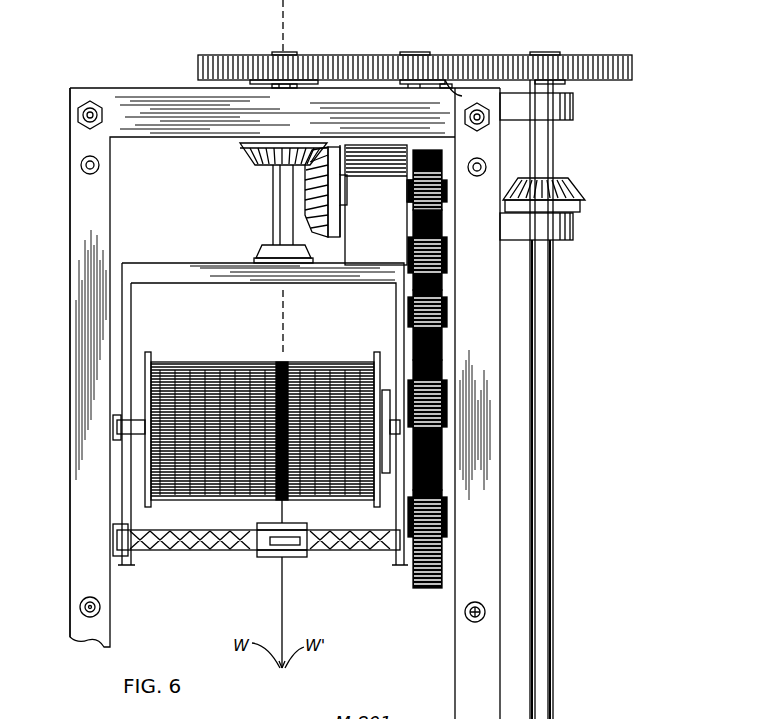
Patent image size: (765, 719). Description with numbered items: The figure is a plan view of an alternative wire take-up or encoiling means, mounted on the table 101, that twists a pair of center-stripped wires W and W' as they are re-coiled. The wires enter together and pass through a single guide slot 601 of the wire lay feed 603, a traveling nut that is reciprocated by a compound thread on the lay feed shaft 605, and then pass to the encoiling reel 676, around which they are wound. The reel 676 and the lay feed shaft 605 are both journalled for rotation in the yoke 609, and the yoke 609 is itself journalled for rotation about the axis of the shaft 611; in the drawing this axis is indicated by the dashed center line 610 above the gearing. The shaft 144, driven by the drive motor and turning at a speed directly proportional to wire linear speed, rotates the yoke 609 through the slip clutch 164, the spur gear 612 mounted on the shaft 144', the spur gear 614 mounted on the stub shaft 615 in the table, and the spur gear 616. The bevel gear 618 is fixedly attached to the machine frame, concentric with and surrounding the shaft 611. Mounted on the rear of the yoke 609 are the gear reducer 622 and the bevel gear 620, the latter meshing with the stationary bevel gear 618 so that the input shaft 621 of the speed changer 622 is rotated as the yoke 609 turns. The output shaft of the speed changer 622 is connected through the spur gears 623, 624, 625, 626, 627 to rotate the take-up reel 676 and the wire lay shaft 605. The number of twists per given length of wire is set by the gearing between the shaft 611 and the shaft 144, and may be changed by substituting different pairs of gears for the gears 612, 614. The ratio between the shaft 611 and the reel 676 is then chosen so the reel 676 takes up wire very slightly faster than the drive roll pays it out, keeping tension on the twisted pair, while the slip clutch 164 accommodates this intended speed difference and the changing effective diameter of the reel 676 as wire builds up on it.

The table 101 is at (101, 586).
The shaft 144 is at (548, 399).
The shaft 144' is at (558, 291).
The slip clutch 164 is at (386, 390).
The guide slot 601 is at (262, 557).
The wire lay feed 603 is at (298, 557).
The lay feed shaft 605 is at (338, 553).
The yoke 609 is at (206, 263).
The axis of drive shaft 610 is at (283, 6).
The shaft 611 is at (273, 207).
The spur gear 612 is at (588, 57).
The spur gear 614 is at (398, 56).
The stub shaft 615 is at (466, 60).
The spur gear 616 is at (325, 56).
The bevel gear 618 is at (246, 160).
The bevel gear 620 is at (318, 238).
The input shaft 621 is at (346, 205).
The gear reducer 622 is at (379, 205).
The spur gear 623 is at (447, 172).
The spur gear 624 is at (448, 260).
The spur gear 625 is at (448, 325).
The spur gear 626 is at (447, 396).
The spur gear 627 is at (433, 589).
The encoiling reel 676 is at (237, 360).